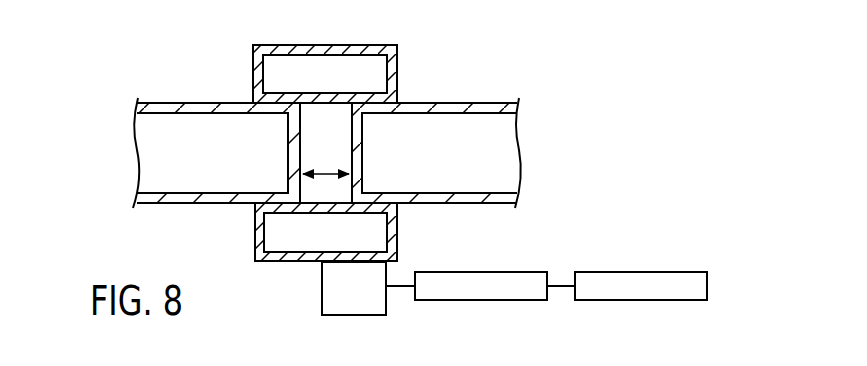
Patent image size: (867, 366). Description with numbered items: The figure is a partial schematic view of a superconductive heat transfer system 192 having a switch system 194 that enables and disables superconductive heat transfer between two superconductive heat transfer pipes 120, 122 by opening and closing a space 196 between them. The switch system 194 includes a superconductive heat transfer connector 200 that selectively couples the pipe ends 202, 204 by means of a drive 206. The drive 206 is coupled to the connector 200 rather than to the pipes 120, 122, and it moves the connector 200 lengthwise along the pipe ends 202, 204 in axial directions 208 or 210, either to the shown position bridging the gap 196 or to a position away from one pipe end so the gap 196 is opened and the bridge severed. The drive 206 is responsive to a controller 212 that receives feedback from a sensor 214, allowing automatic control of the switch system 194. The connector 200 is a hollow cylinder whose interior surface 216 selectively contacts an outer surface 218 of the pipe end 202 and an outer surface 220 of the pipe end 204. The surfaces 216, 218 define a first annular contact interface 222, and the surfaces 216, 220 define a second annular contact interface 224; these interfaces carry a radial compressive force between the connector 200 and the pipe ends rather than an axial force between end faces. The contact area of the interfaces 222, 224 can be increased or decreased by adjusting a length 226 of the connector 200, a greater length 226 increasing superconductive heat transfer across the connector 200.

The superconductive heat transfer pipe 120 is at (133, 153).
The superconductive heat transfer pipe 122 is at (520, 147).
The superconductive heat transfer system 192 is at (431, 30).
The switch system 194 is at (241, 270).
The space 196 is at (327, 182).
The superconductive heat transfer connector 200 is at (252, 50).
The pipe end 202 is at (164, 214).
The pipe end 204 is at (485, 212).
The drive 206 is at (322, 290).
The axial direction 208 is at (220, 75).
The axial direction 210 is at (428, 72).
The controller 212 is at (478, 300).
The sensor 214 is at (640, 300).
The interior surface 216 is at (323, 103).
The outer surface 218 is at (217, 207).
The outer surface 220 is at (503, 98).
The first annular contact interface 222 is at (283, 113).
The second annular contact interface 224 is at (368, 109).
The length 226 is at (397, 33).